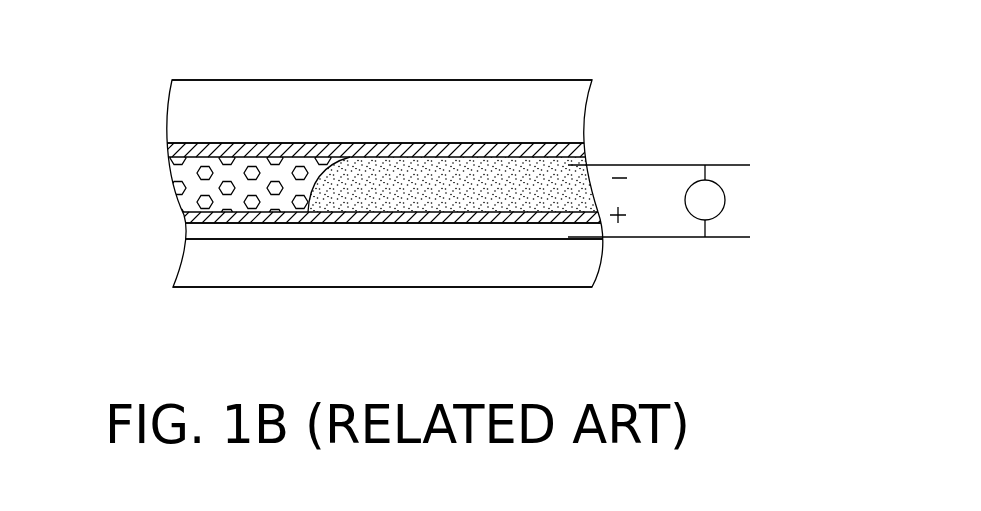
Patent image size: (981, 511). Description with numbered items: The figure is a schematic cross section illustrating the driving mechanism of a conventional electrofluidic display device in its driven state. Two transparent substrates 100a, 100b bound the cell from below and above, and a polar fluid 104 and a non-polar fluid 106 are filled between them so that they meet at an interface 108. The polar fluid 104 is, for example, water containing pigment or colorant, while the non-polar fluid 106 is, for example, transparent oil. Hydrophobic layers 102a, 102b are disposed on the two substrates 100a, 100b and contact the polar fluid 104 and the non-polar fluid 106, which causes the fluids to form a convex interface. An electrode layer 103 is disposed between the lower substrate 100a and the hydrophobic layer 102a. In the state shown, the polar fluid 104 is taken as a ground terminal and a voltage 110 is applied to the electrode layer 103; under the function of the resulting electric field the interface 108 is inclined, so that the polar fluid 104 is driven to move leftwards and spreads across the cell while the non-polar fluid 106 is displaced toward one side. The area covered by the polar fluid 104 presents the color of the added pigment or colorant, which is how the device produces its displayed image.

The transparent substrate 100b is at (167, 93).
The hydrophobic layer 102b is at (167, 147).
The non-polar fluid 106 is at (287, 163).
The interface 108 is at (349, 160).
The polar fluid 104 is at (480, 173).
The hydrophobic layer 102a is at (190, 212).
The electrode layer 103 is at (187, 233).
The transparent substrate 100a is at (190, 259).
The voltage 110 is at (725, 200).